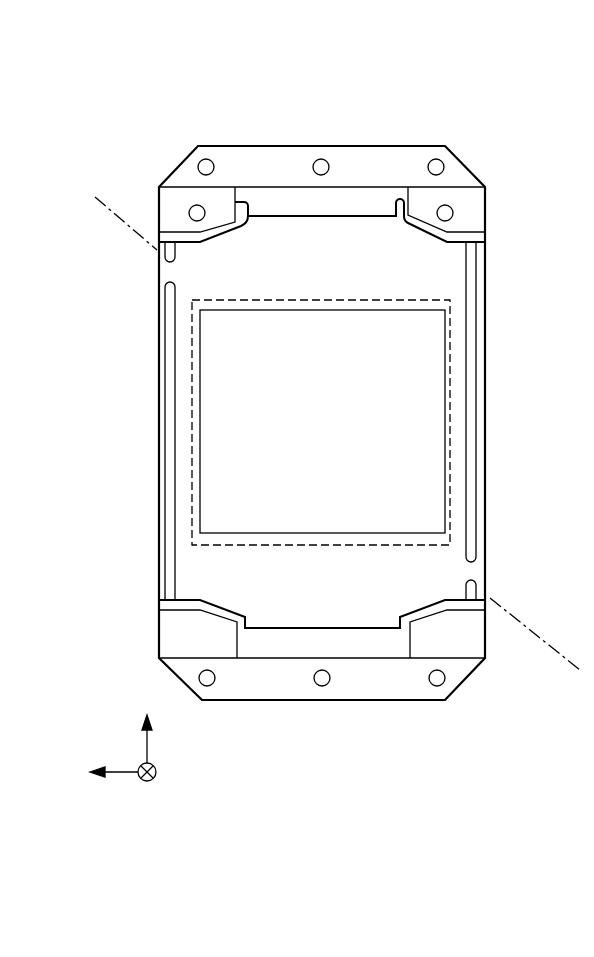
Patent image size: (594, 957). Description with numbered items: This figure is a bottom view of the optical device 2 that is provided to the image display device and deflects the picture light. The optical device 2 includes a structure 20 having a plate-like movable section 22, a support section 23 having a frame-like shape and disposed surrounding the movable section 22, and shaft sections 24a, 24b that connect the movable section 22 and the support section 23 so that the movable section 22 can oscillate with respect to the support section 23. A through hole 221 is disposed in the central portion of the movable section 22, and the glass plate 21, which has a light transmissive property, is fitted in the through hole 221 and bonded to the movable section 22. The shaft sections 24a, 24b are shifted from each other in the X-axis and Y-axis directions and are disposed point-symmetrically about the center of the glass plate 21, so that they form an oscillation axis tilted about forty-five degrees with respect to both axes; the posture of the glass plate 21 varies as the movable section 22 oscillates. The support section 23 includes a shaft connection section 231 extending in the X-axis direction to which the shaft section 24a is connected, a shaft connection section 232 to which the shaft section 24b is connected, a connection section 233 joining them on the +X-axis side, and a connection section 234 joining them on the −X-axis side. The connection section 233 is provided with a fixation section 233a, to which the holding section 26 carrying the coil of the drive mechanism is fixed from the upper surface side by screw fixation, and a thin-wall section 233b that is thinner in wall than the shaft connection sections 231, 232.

The optical device 2 is at (190, 123).
The structure 20 is at (307, 701).
The glass plate 21 is at (430, 405).
The movable section 22 is at (440, 283).
The support section 23 is at (484, 497).
The shaft section 24a is at (160, 268).
The shaft section 24b is at (478, 577).
The holding section 26 is at (245, 200).
The through hole 221 is at (200, 425).
The shaft connection section 231 is at (161, 347).
The shaft connection section 232 is at (483, 353).
The connection section 233 is at (527, 88).
The fixation section 233a is at (468, 202).
The thin-wall section 233b is at (399, 158).
The connection section 234 is at (385, 692).